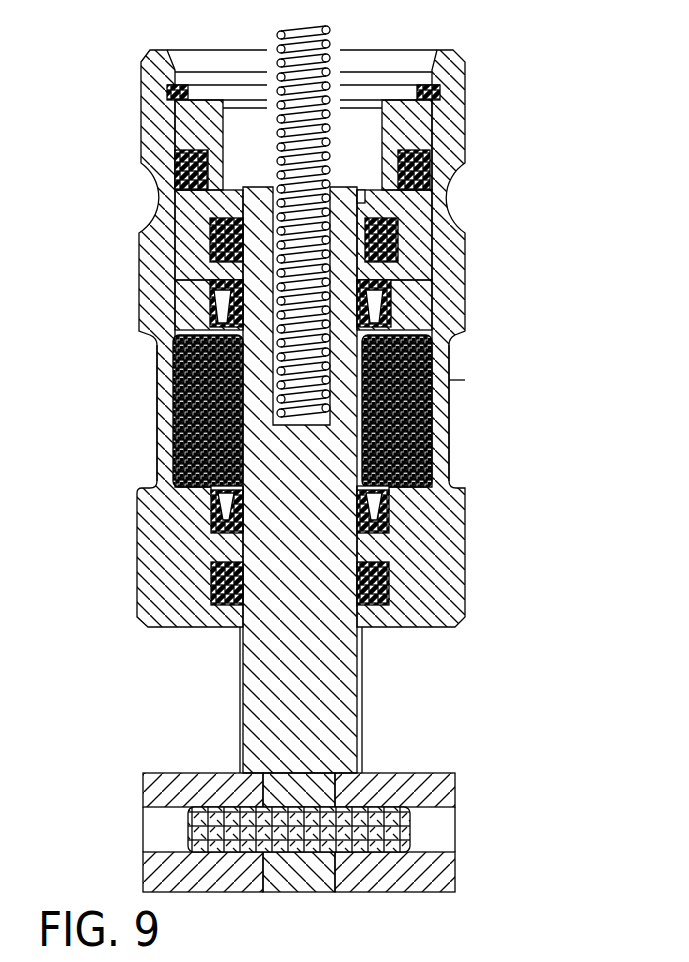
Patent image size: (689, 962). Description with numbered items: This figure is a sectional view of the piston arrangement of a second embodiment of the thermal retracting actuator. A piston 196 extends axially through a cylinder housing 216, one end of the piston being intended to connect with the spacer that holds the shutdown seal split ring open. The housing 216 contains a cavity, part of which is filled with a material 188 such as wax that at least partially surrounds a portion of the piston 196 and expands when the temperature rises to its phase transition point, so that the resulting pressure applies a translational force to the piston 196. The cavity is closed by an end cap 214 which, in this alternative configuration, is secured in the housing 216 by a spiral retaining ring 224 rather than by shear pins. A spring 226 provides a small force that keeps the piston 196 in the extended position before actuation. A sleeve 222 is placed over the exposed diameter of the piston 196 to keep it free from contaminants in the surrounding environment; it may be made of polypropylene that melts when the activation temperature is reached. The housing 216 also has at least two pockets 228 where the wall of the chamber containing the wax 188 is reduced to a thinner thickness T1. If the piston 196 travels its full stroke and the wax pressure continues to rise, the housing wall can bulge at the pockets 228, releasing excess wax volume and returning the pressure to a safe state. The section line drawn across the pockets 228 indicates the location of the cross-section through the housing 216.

The material 188 is at (197, 396).
The piston 196 is at (270, 717).
The end cap 214 is at (420, 253).
The cylinder/housing 216 is at (148, 130).
The sleeve 222 is at (362, 742).
The spiral retaining ring 224 is at (440, 97).
The spring 226 is at (334, 45).
The pockets 228 is at (148, 458).
The reduced wall thickness T1 is at (451, 380).